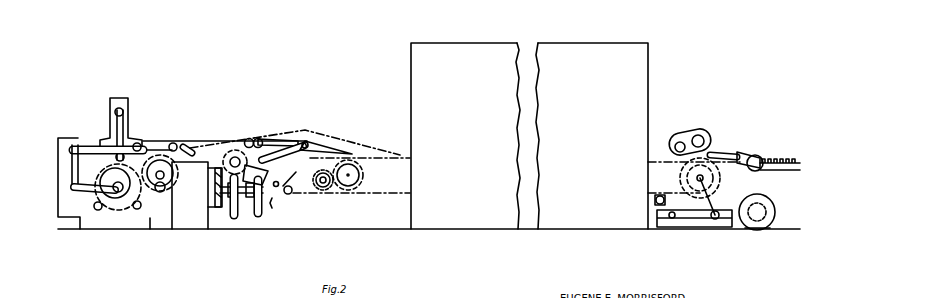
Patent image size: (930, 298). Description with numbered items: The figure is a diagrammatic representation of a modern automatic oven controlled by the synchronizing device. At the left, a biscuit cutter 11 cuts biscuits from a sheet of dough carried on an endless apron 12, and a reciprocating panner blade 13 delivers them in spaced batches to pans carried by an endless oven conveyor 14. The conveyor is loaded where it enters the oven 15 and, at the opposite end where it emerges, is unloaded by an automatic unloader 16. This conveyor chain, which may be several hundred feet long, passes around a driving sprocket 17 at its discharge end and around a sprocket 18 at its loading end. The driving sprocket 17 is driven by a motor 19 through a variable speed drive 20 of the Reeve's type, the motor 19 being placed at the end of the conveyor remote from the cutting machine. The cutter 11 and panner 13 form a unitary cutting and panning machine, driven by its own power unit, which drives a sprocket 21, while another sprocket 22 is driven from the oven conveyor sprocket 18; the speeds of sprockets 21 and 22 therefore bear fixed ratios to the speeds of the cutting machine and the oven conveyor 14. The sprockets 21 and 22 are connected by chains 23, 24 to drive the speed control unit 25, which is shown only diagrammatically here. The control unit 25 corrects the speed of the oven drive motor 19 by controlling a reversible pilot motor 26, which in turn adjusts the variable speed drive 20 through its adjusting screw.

The biscuit cutter 11 is at (122, 122).
The endless apron 12 is at (153, 139).
The reciprocating panner blade 13 is at (322, 150).
The endless oven conveyor 14 is at (398, 158).
The oven 15 is at (656, 64).
The automatic unloader 16 is at (705, 132).
The driving sprocket 17 is at (720, 178).
The sprocket 18 is at (363, 177).
The motor 19 is at (775, 202).
The variable speed drive 20 is at (705, 228).
The sprocket 21 is at (280, 206).
The sprocket 22 is at (327, 190).
The chain 23 is at (276, 183).
The chain 24 is at (296, 172).
The speed control unit 25 is at (292, 193).
The reversible pilot motor 26 is at (660, 196).